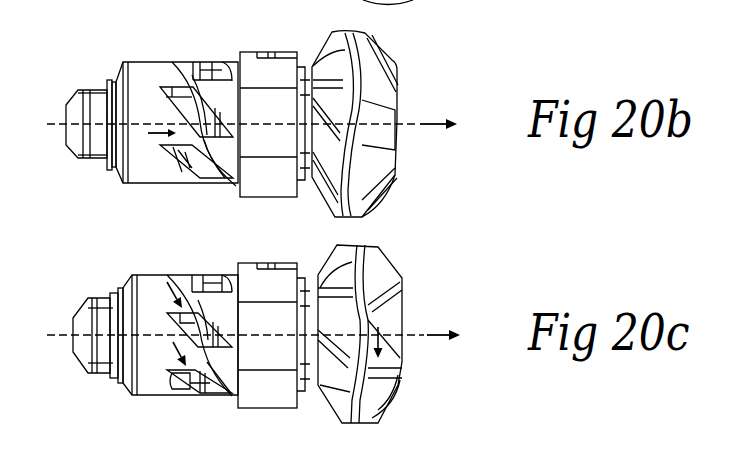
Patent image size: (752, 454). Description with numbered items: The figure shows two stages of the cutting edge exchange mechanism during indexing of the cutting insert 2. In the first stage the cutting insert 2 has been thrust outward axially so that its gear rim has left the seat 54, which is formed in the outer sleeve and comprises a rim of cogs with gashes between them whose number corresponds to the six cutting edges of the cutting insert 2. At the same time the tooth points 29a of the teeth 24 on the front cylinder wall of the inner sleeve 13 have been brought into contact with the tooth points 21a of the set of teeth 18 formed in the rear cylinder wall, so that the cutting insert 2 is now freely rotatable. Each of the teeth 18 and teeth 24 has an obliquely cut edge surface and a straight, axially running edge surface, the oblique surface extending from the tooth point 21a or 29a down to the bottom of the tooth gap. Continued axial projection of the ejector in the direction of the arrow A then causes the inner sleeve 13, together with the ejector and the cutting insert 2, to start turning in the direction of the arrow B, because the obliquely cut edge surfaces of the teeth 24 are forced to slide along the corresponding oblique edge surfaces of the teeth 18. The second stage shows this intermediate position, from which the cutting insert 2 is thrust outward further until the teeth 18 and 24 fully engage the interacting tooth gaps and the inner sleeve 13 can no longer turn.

In FIG. 20B, the cutting insert 2 is at (404, 44).
In FIG. 20C, the cutting insert 2 is at (360, 334).
In FIG. 20B, the inner sleeve 13 is at (125, 198).
In FIG. 20C, the inner sleeve 13 is at (155, 335).
In FIG. 20C, the set of teeth 18 is at (208, 390).
In FIG. 20B, the tooth point 21a is at (196, 136).
In FIG. 20C, the tooth point 21a is at (267, 335).
In FIG. 20C, the teeth 24 is at (192, 271).
In FIG. 20B, the tooth point 29a is at (196, 151).
In FIG. 20B, the seat 54 is at (309, 72).
In FIG. 20C, the seat 54 is at (303, 334).
In FIG. 20B, the arrow A is at (436, 130).
In FIG. 20C, the arrow B is at (177, 353).